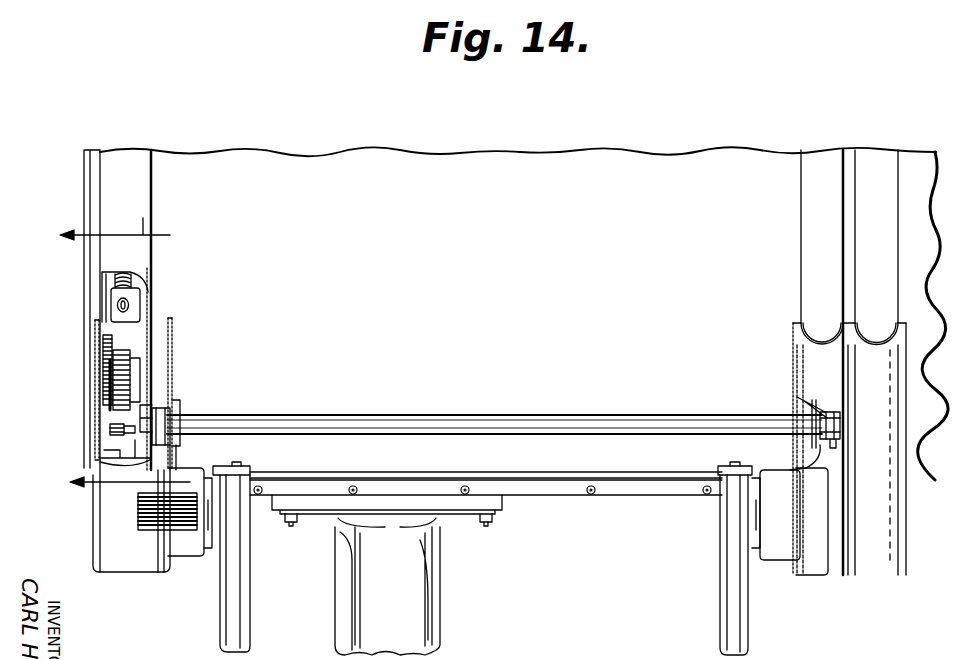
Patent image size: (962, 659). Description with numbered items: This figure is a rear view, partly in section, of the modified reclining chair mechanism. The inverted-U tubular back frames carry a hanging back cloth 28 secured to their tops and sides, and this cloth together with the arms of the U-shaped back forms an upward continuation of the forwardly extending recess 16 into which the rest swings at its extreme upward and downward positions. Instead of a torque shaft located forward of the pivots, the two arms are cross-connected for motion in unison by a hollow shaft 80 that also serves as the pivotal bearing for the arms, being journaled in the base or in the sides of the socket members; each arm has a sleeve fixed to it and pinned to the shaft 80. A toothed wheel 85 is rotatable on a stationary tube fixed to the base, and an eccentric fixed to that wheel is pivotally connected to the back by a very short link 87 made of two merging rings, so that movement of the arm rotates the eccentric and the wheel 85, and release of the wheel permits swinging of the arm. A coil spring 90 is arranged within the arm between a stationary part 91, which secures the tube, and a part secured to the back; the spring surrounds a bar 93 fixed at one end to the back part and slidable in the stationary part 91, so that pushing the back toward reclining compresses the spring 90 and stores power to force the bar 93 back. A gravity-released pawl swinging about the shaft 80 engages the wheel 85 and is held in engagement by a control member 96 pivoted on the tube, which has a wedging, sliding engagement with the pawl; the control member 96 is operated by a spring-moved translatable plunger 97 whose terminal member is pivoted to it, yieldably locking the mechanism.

The forwardly extending recess 16 is at (578, 213).
The hanging back cloth 28 is at (483, 167).
The hollow shaft 80 is at (317, 425).
The toothed wheel 85 is at (147, 340).
The link 87 is at (110, 363).
The coil spring 90 is at (146, 283).
The stationary part 91 is at (128, 300).
The bar 93 is at (138, 294).
The control member 96 is at (110, 431).
The plunger 97 is at (105, 462).